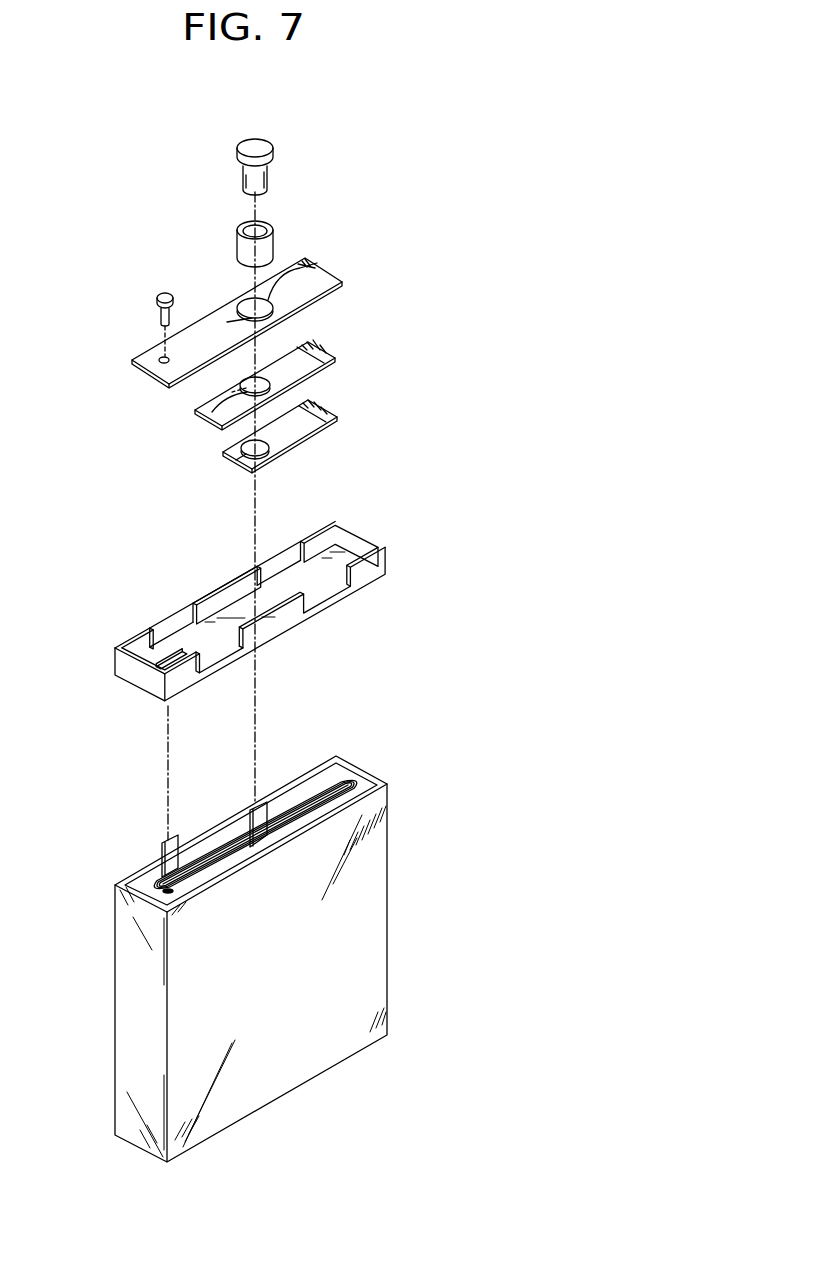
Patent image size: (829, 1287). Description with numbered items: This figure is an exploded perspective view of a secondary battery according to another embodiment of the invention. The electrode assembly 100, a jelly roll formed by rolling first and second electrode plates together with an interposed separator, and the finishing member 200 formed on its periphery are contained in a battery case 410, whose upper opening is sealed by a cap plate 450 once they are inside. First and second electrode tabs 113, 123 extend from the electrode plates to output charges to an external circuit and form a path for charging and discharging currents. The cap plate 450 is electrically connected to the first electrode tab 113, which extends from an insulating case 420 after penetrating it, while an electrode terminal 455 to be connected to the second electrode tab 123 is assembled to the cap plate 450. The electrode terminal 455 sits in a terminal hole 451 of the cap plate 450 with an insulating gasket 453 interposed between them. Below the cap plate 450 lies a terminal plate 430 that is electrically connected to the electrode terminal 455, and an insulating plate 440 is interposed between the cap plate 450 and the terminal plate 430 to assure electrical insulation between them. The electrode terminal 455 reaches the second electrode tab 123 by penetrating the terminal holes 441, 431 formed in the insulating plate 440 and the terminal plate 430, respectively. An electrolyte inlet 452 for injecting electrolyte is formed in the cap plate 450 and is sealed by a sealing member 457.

The electrode assembly 100 is at (356, 781).
The first electrode tab 113 is at (161, 842).
The second electrode tab 123 is at (262, 810).
The finishing member 200 is at (321, 777).
The battery case 410 is at (380, 893).
The insulating case 420 is at (378, 569).
The terminal plate 430 is at (281, 440).
The terminal hole 431 is at (234, 465).
The insulating plate 440 is at (256, 387).
The terminal hole 441 is at (210, 414).
The cap plate 450 is at (247, 306).
The terminal hole 451 is at (312, 268).
The electrolyte inlet 452 is at (162, 358).
The insulating gasket 453 is at (276, 231).
The electrode terminal 455 is at (273, 153).
The sealing member 457 is at (160, 294).